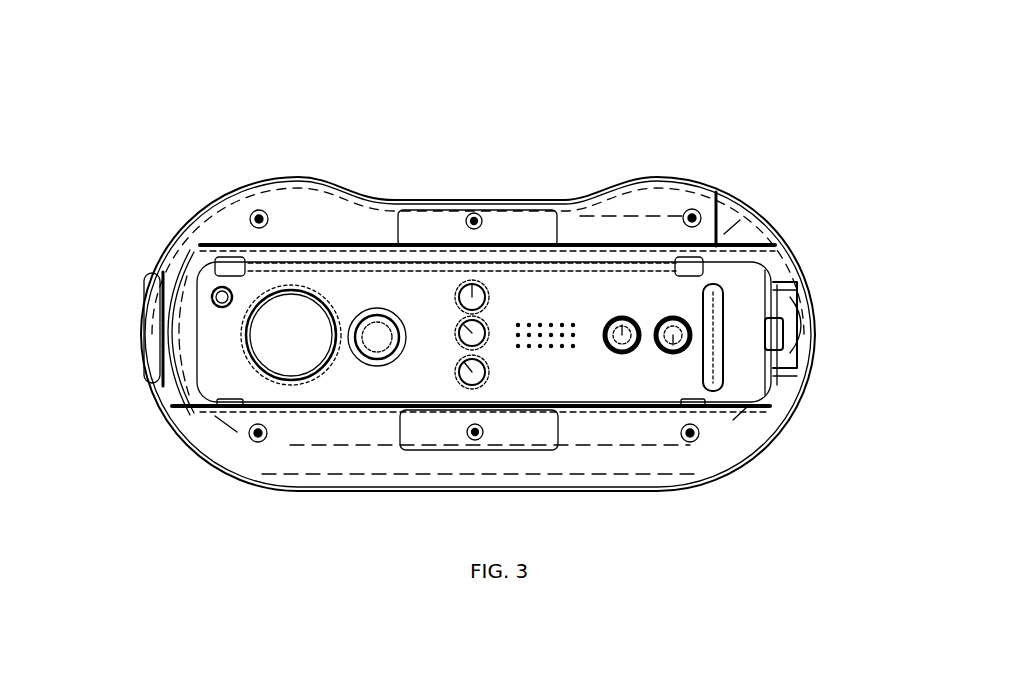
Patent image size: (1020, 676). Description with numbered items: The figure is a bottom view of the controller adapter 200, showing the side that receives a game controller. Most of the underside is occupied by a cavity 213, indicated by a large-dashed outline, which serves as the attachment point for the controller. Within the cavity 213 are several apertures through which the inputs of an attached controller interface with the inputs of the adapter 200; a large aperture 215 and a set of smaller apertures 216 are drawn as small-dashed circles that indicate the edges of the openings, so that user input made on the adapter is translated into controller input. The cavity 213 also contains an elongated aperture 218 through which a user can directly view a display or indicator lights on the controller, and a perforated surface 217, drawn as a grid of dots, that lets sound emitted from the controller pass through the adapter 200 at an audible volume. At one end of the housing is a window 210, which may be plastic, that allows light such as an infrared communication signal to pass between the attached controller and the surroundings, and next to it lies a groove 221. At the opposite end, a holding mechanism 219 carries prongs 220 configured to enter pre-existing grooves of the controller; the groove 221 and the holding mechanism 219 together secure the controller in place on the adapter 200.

The controller adapter 200 is at (175, 224).
The window 210 is at (152, 343).
The cavity 213 is at (205, 407).
The aperture 215 is at (290, 316).
The aperture 216 is at (226, 290).
The perforated surface 217 is at (540, 325).
The aperture 218 is at (704, 282).
The holding mechanism 219 is at (723, 235).
The prong 220 is at (797, 282).
The groove 221 is at (168, 279).